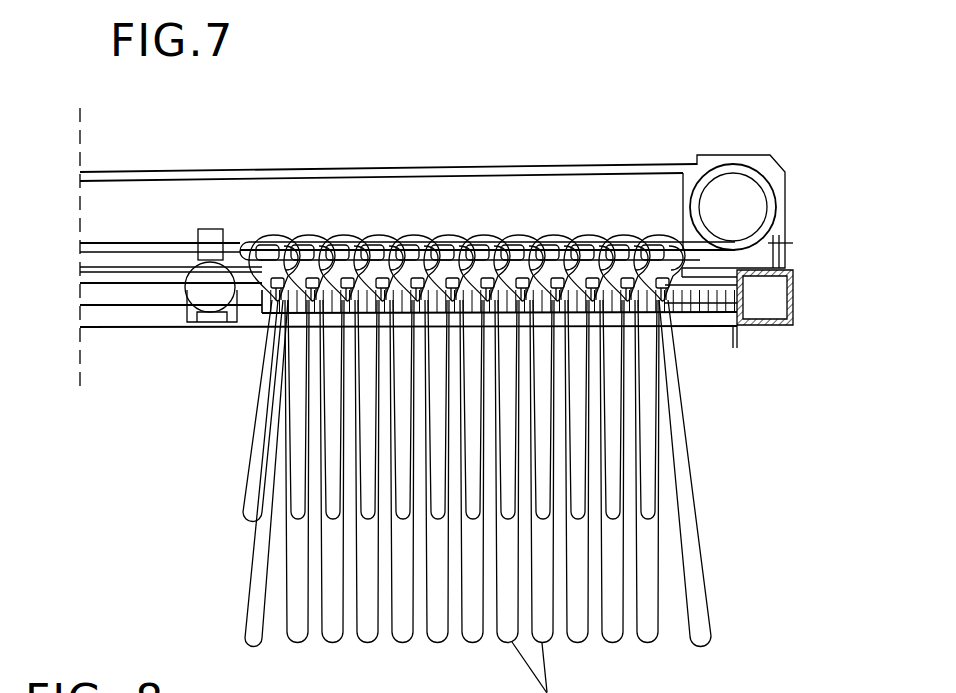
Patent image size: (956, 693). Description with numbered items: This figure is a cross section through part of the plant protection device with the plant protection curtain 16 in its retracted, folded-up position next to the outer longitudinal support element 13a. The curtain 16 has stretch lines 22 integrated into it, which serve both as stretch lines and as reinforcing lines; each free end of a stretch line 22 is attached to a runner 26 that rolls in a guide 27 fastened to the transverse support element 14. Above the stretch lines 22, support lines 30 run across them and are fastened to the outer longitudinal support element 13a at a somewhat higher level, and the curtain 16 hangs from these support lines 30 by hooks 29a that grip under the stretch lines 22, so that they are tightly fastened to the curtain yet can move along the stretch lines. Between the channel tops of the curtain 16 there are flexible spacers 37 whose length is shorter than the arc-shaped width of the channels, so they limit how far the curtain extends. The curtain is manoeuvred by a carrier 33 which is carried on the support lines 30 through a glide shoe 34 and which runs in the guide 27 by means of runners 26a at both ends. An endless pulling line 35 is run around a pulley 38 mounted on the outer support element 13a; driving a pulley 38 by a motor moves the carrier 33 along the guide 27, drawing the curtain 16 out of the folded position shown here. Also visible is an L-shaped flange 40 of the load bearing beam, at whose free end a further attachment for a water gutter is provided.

The endless pulling line 35 is at (517, 170).
The pulley 38 is at (731, 200).
The support line 30 is at (132, 222).
The glide shoe 34 is at (213, 238).
The carrier 33 is at (205, 300).
The runner 26a is at (233, 322).
The guide 27 is at (157, 281).
The transverse support element 14 is at (103, 315).
The stretch line 22 is at (673, 290).
The hook 29a is at (495, 240).
The runner 26 is at (672, 308).
The flexible spacer 37 is at (262, 483).
The plant protection curtain 16 is at (720, 500).
The L-shaped flange 40 is at (738, 347).
The outer longitudinal support element 13a is at (780, 287).